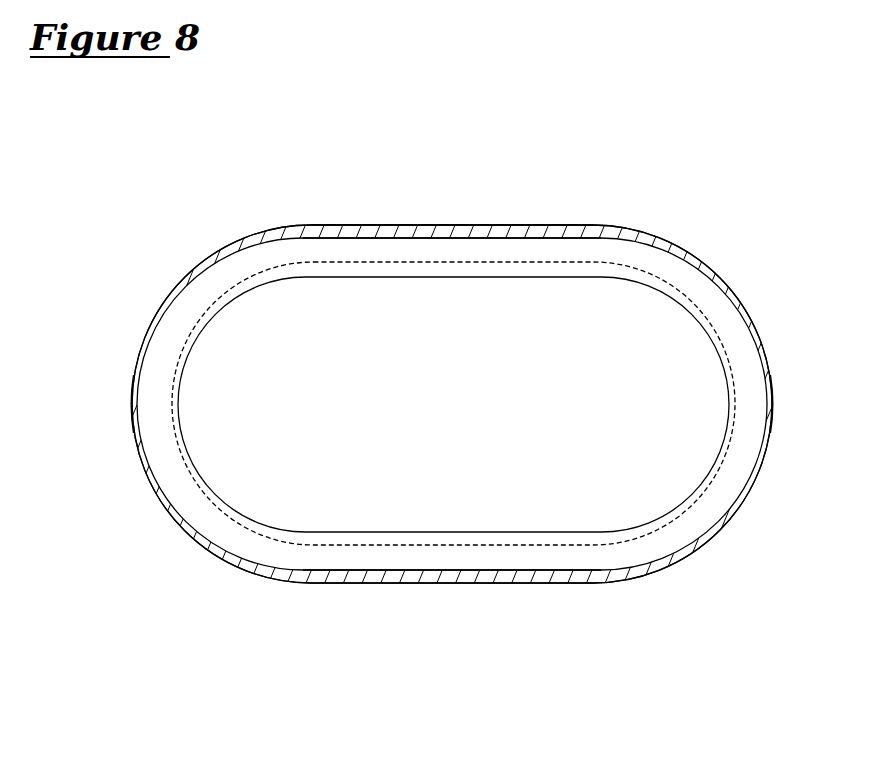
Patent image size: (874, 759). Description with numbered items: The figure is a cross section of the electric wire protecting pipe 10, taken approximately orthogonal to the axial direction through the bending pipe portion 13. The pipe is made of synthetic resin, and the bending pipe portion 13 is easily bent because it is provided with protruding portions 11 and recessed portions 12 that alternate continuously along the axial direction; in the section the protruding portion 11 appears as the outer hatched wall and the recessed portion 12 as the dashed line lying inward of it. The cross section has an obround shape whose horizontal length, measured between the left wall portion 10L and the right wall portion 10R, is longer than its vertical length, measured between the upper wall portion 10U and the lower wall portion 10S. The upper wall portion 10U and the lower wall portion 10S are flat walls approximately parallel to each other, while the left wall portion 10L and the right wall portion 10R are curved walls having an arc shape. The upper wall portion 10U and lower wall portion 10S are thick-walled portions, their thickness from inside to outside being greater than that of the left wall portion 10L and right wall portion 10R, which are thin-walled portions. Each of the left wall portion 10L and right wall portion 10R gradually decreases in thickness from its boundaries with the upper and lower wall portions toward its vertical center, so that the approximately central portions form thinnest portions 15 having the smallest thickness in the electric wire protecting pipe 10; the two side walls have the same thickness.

The electric wire protecting pipe 10 is at (453, 112).
The upper wall portion 10U is at (458, 228).
The lower wall portion 10S is at (462, 575).
The right wall portion 10R is at (172, 297).
The left wall portion 10L is at (745, 305).
The protruding portion 11 is at (549, 228).
The recessed portion 12 is at (587, 262).
The bending pipe portion 13 is at (351, 228).
The thinnest portion 15 is at (135, 408).